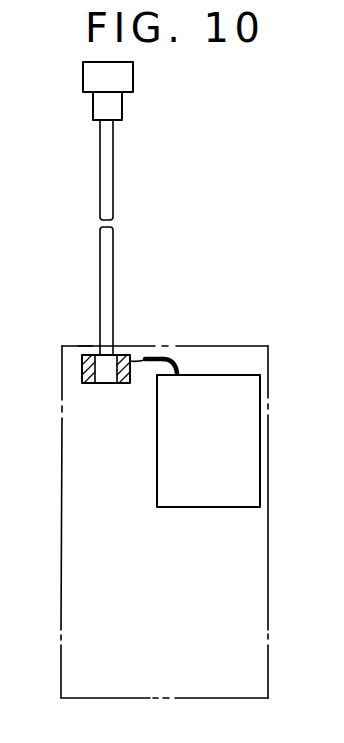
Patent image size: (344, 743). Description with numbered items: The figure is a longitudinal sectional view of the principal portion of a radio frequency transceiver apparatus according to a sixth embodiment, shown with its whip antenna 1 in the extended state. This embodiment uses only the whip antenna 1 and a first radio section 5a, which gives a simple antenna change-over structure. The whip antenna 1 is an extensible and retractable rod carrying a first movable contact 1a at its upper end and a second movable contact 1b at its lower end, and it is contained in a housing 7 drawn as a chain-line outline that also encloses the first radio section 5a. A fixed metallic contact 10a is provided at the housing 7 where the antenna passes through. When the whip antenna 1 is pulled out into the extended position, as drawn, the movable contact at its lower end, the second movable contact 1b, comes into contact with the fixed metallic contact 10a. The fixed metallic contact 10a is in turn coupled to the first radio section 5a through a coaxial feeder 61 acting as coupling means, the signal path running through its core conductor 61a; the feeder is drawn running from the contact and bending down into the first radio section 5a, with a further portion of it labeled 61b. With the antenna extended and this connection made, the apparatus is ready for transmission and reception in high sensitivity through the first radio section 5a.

The whip antenna 1 is at (114, 192).
The first movable contact 1a is at (118, 104).
The second movable contact 1b is at (102, 385).
The fixed metallic contact 10a is at (85, 347).
The housing 7 is at (237, 348).
The coaxial feeder 61 is at (168, 355).
The core conductor 61a is at (137, 348).
The lead conductor curved portion 61b is at (152, 367).
The first radio section 5a is at (190, 495).